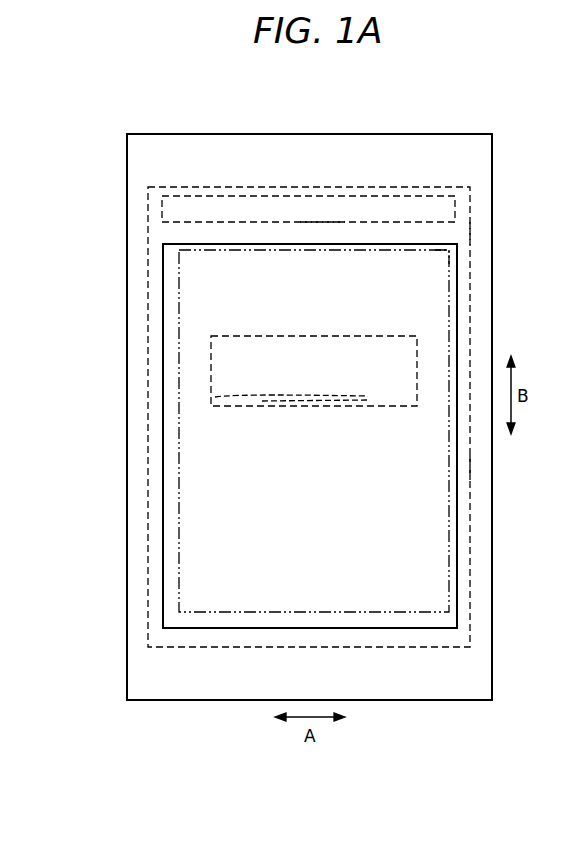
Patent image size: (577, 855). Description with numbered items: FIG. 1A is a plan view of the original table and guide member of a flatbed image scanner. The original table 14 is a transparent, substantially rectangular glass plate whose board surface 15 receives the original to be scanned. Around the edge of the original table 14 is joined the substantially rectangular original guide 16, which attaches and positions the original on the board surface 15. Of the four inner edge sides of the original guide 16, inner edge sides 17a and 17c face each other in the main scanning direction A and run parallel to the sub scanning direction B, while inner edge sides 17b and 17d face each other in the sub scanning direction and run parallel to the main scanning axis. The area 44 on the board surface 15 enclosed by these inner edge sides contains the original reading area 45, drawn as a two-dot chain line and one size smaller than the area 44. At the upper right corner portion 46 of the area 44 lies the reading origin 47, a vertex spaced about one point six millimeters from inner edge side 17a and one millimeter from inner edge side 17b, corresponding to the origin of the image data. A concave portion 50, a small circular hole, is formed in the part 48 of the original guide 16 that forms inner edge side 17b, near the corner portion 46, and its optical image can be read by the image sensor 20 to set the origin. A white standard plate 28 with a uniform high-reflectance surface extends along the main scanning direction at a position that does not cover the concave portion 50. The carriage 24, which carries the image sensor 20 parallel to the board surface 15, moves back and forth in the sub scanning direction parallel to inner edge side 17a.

The original table 14 is at (465, 468).
The board surface 15 is at (322, 494).
The original guide 16 is at (481, 671).
The inner edge side 17a is at (440, 546).
The inner edge side 17b is at (175, 246).
The inner edge side 17c is at (163, 529).
The inner edge side 17d is at (390, 629).
The image sensor 20 is at (211, 401).
The carriage 24 is at (213, 365).
The white standard plate 28 is at (167, 213).
The area 44 is at (150, 330).
The original reading area 45 is at (178, 300).
The corner portion 46 is at (449, 256).
The reading origin 47 is at (450, 252).
The part 48 is at (322, 228).
The concave portion 50 is at (440, 234).